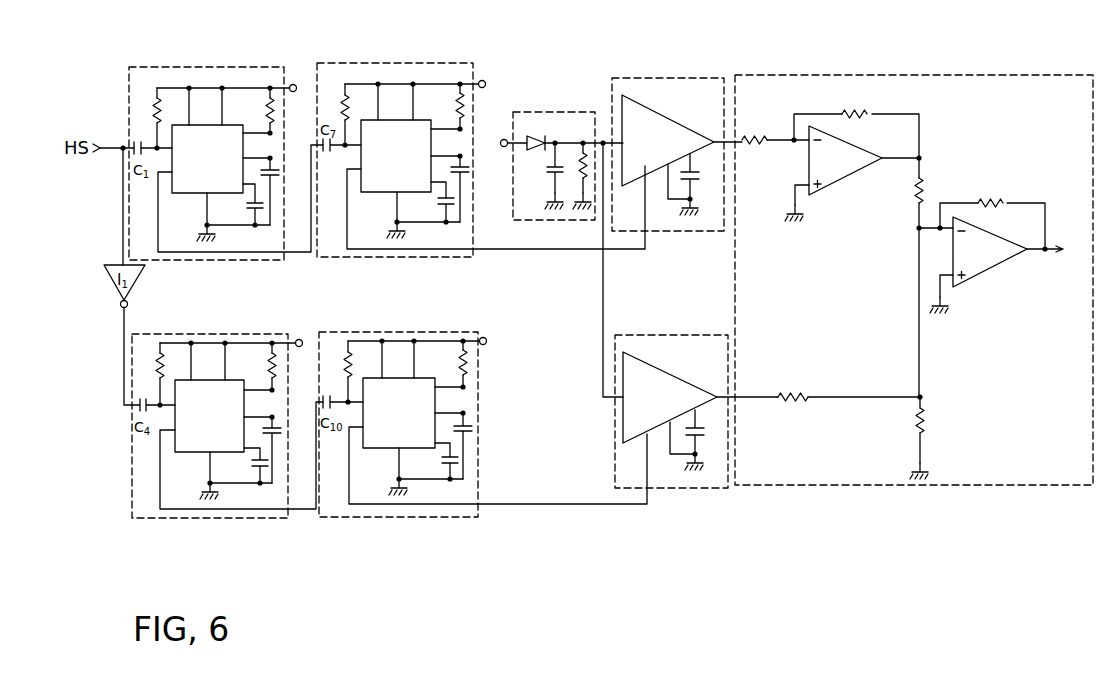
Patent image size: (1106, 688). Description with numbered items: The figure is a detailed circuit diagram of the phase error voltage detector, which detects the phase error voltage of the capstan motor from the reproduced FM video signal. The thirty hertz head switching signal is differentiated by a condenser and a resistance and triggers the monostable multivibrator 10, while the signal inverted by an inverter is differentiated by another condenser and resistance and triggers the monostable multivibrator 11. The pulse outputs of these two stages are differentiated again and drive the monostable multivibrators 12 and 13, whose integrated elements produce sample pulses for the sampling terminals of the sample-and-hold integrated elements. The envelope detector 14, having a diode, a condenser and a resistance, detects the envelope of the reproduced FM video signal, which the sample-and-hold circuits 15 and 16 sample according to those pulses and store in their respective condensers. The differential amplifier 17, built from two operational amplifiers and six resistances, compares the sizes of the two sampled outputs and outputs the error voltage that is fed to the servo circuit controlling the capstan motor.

The monostable multivibrator 10 is at (253, 65).
The monostable multivibrator 11 is at (257, 520).
The monostable multivibrator 12 is at (453, 60).
The monostable multivibrator 13 is at (462, 518).
The envelope detector 14 is at (572, 110).
The sample-and-hold circuit 15 is at (713, 75).
The sample-and-hold circuit 16 is at (707, 488).
The differential amplifier 17 is at (1008, 72).